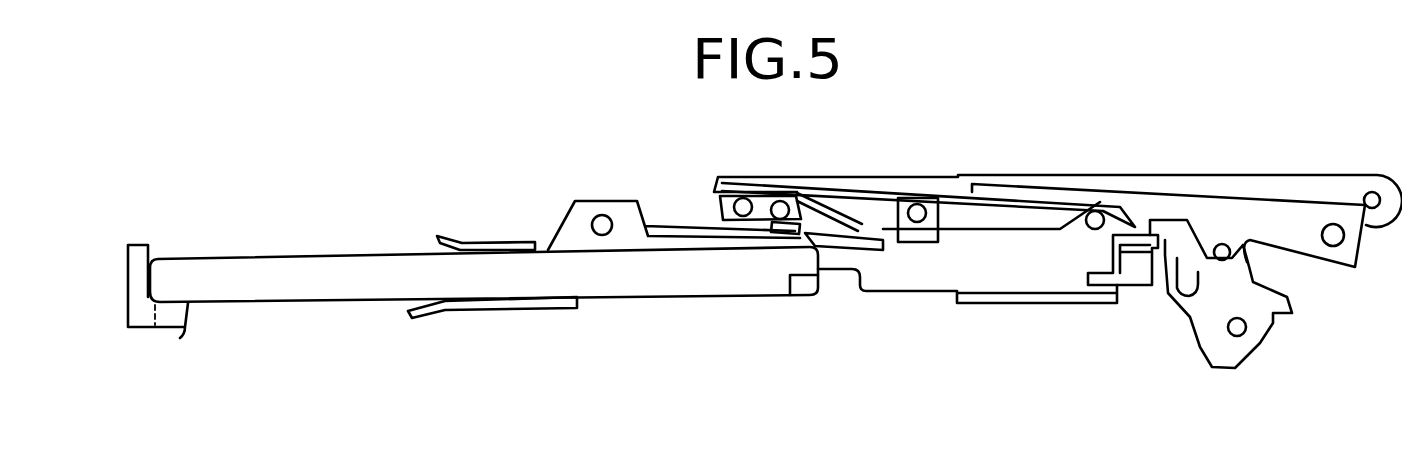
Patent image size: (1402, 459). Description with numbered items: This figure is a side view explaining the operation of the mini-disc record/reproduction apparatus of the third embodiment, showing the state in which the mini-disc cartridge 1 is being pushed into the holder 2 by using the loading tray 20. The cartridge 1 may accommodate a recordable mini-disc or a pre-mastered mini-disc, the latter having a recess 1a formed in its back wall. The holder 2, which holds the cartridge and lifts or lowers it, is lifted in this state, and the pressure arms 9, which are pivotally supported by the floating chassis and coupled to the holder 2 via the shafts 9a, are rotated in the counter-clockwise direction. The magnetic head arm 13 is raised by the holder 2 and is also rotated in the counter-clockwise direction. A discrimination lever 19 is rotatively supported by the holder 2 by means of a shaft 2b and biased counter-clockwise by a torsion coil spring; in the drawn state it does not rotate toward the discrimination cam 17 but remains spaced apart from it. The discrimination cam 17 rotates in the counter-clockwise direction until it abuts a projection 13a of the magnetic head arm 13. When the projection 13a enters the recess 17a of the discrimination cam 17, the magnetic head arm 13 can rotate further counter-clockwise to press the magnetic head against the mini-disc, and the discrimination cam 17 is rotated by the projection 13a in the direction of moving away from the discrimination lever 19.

The mini-disc cartridge 1 is at (253, 258).
The recess 1a is at (805, 298).
The holder 2 is at (498, 244).
The shaft 2b is at (1110, 248).
The pressure arm 9 is at (1212, 174).
The shaft 9a is at (917, 197).
The magnetic head arm 13 is at (1128, 176).
The projection 13a is at (1227, 244).
The discrimination cam 17 is at (1295, 309).
The recess 17a is at (1200, 300).
The discrimination lever 19 is at (1138, 290).
The loading tray 20 is at (126, 268).